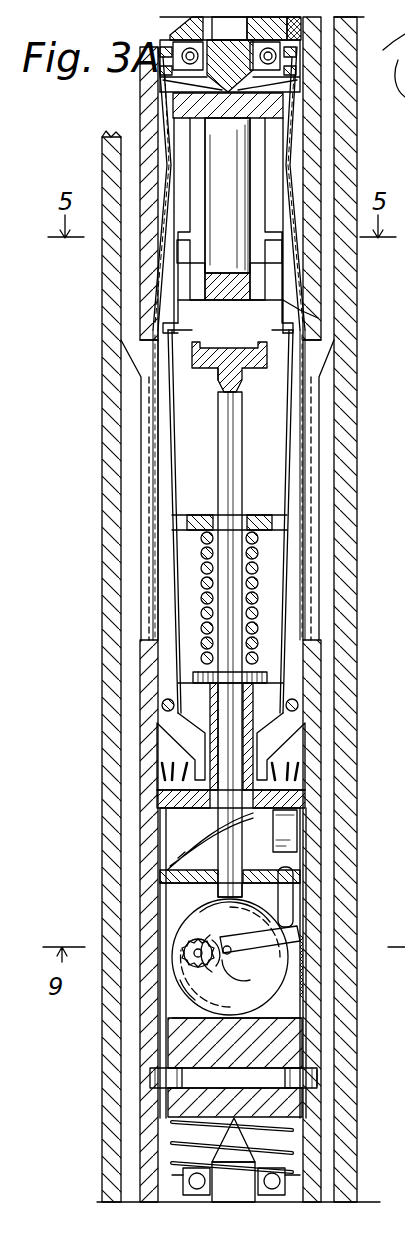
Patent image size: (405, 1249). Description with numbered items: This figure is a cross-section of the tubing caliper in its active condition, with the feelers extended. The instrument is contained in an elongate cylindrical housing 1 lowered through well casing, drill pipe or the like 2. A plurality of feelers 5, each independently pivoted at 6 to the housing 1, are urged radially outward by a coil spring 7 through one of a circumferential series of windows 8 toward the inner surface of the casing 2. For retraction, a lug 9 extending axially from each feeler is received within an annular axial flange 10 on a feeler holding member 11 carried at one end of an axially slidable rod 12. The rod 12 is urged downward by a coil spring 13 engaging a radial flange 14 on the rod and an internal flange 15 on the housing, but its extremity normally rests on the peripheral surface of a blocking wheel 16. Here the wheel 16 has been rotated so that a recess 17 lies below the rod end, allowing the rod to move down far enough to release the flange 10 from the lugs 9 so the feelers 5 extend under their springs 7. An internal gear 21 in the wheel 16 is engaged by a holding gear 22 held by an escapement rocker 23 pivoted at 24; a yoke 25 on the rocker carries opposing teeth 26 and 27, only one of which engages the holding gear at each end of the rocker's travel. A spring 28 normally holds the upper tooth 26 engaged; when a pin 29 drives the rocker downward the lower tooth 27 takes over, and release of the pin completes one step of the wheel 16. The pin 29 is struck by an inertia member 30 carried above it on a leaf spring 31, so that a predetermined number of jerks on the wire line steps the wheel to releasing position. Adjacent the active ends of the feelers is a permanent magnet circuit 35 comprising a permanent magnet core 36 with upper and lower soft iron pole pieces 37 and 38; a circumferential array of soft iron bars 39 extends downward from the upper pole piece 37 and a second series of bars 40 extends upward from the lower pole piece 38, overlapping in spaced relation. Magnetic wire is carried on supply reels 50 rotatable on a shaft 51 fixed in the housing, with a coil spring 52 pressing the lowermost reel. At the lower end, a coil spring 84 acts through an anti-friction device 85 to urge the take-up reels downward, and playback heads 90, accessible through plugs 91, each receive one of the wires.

The housing 1 is at (318, 842).
The well casing 2 is at (358, 633).
The feelers 5 is at (325, 342).
The pivot 6 is at (299, 706).
The coil spring 7 is at (285, 757).
The windows 8 is at (313, 298).
The lug 9 is at (282, 340).
The annular axial flange 10 is at (250, 343).
The feeler holding member 11 is at (212, 368).
The slidable rod 12 is at (240, 430).
The coil spring 13 is at (258, 562).
The radial flange 14 is at (262, 672).
The internal flange 15 is at (258, 514).
The blocking wheel 16 is at (296, 1010).
The recess 17 is at (215, 900).
The internal gear 21 is at (280, 985).
The holding gear 22 is at (188, 957).
The escapement rocker 23 is at (292, 934).
The pivot 24 is at (232, 962).
The yoke 25 is at (198, 926).
The upper tooth 26 is at (188, 941).
The lower tooth 27 is at (195, 975).
The spring 28 is at (302, 958).
The pin 29 is at (292, 898).
The inertia member 30 is at (293, 830).
The leaf spring 31 is at (208, 833).
The permanent magnet circuit 35 is at (166, 155).
The permanent magnet core 36 is at (232, 191).
The upper pole piece 37 is at (193, 103).
The lower pole piece 38 is at (218, 298).
The soft iron bars 39 is at (180, 127).
The soft iron bars 40 is at (182, 253).
The supply reels 50 is at (186, 25).
The shaft 51 is at (236, 37).
The coil spring 52 is at (165, 72).
The coil spring 84 is at (292, 1153).
The anti-friction device 85 is at (286, 1172).
The playback heads 90 is at (285, 1080).
The plugs 91 is at (320, 1078).